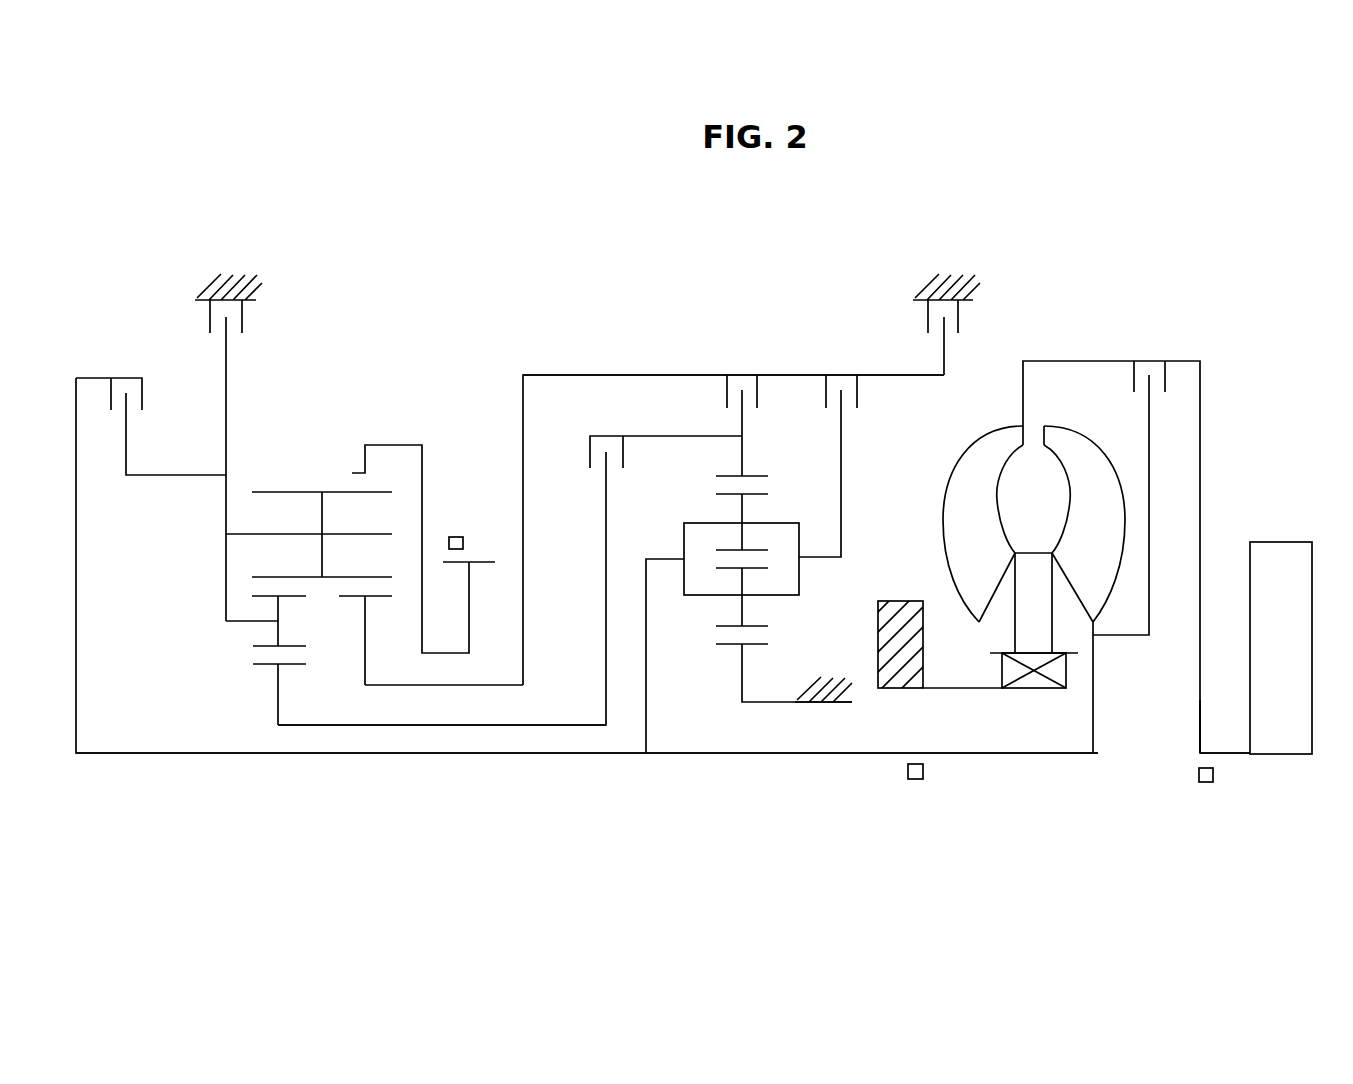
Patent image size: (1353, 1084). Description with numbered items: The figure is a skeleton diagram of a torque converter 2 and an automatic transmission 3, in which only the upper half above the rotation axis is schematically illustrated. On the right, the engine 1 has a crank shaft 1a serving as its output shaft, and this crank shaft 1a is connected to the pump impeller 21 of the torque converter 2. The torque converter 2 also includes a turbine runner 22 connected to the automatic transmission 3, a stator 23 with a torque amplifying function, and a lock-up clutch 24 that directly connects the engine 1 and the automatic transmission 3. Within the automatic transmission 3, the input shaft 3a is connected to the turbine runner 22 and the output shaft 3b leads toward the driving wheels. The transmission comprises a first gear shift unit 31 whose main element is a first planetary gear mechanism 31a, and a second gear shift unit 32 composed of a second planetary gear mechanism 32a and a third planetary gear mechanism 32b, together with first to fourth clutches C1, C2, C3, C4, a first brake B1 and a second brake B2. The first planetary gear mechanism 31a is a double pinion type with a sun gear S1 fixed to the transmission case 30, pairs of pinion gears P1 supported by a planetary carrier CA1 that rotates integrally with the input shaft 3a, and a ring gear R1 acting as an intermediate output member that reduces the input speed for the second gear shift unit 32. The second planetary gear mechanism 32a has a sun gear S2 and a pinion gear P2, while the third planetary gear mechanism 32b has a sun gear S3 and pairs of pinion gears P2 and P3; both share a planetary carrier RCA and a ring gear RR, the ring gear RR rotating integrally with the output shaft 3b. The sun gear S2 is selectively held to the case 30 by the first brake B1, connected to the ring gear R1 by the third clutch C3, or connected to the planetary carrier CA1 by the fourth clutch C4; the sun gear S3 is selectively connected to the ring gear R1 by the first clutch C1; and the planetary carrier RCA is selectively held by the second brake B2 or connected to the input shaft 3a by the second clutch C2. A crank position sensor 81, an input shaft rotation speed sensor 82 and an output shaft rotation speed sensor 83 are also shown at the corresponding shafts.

The engine 1 is at (1281, 542).
The crank shaft 1a is at (1240, 755).
The torque converter 2 is at (1083, 352).
The pump impeller 21 is at (977, 448).
The turbine runner 22 is at (1091, 446).
The stator 23 is at (1035, 553).
The lock-up clutch 24 is at (1158, 350).
The automatic transmission 3 is at (712, 290).
The input shaft 3a is at (780, 755).
The output shaft 3b is at (487, 562).
The transmission case 30 is at (252, 300).
The first gear shift unit 31 is at (785, 355).
The first planetary gear mechanism 31a is at (683, 682).
The second gear shift unit 32 is at (455, 348).
The second planetary gear mechanism 32a is at (364, 700).
The third planetary gear mechanism 32b is at (252, 700).
The crank position sensor 81 is at (1206, 782).
The input shaft rotation speed sensor 82 is at (915, 780).
The output shaft rotation speed sensor 83 is at (455, 537).
The first brake B1 is at (928, 319).
The second brake B2 is at (208, 319).
The first clutch C1 is at (590, 452).
The second clutch C2 is at (110, 393).
The third clutch C3 is at (727, 393).
The fourth clutch C4 is at (857, 393).
The sun gear S1 is at (730, 647).
The pinion gears P1 is at (766, 493).
The ring gear R1 is at (716, 476).
The planetary carrier CA1 is at (802, 574).
The sun gear S2 is at (380, 595).
The pinion gear P2 is at (329, 580).
The sun gear S3 is at (265, 663).
The pinion gear P3 is at (265, 595).
The ring gear RR is at (356, 473).
The planetary carrier RCA is at (227, 560).